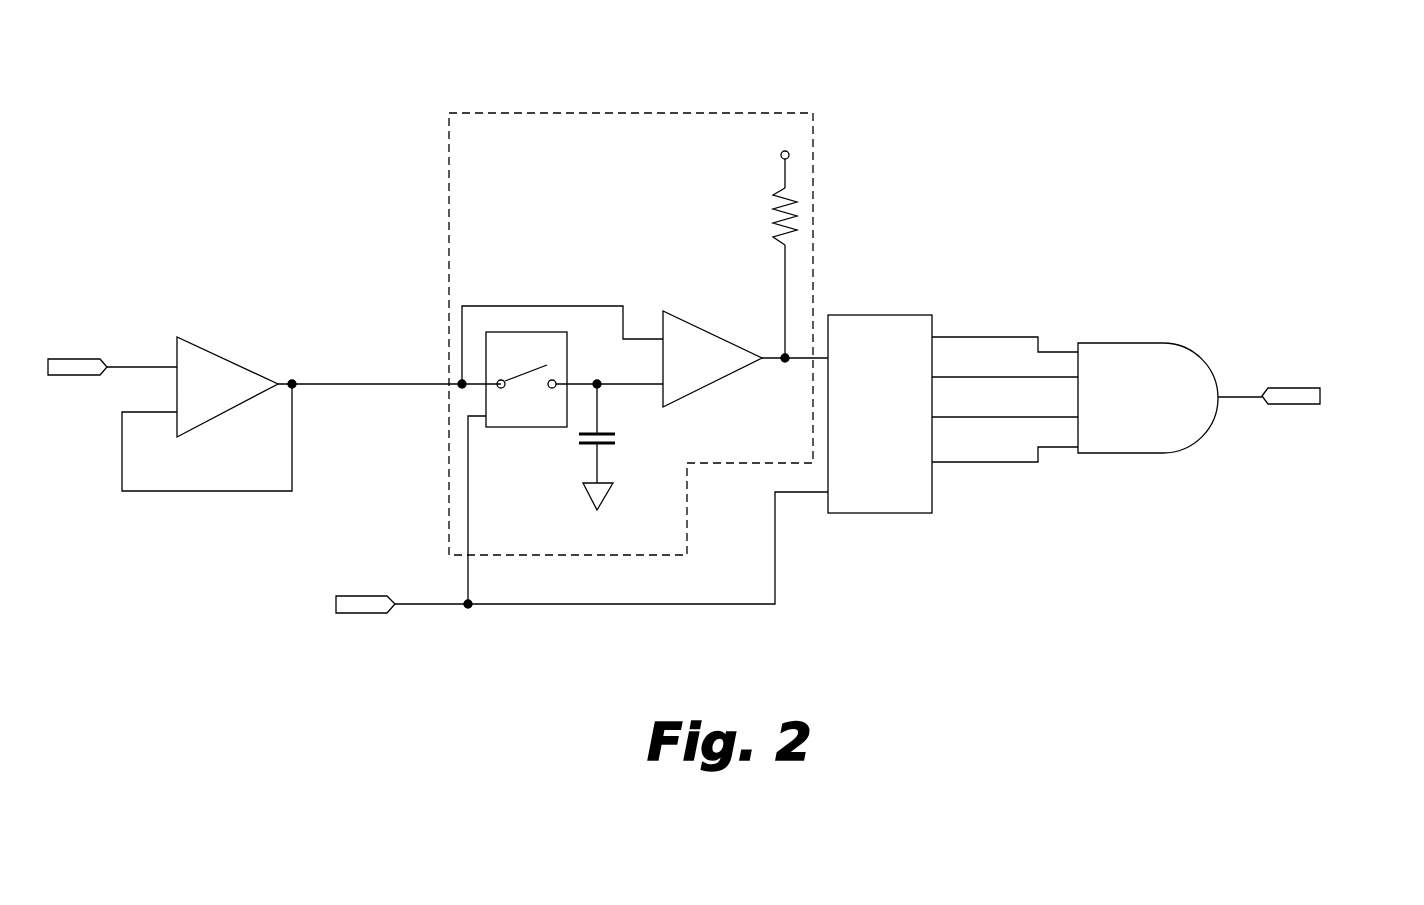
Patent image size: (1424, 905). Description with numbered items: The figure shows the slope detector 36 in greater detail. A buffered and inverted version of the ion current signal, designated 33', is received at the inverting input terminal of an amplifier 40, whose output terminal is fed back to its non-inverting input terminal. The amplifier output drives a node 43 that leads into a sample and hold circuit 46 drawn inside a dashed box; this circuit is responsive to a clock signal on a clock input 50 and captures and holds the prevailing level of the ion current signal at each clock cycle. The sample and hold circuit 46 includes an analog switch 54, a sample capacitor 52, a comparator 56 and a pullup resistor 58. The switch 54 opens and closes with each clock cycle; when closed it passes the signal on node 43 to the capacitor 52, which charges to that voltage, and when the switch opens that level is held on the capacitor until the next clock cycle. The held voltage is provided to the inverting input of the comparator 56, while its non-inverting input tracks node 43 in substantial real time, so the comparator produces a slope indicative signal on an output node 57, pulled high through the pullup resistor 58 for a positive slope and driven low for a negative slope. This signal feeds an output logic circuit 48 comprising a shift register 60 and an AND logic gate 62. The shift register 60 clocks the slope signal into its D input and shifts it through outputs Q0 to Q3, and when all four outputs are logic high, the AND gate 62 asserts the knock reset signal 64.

The buffered and inverted ion current signal 33' is at (112, 324).
The amplifier 40 is at (228, 357).
The slope detector 36 is at (517, 77).
The sample and hold circuit 46 is at (446, 208).
The node 43 is at (458, 381).
The analog switch 54 is at (513, 422).
The sample capacitor 52 is at (607, 447).
The comparator 56 is at (702, 382).
The output node 57 is at (782, 356).
The pullup resistor 58 is at (778, 222).
The shift register 60 is at (881, 315).
The output logic circuit 48 is at (1013, 294).
The AND logic gate 62 is at (1160, 355).
The knock reset signal 64 is at (1288, 404).
The clock input 50 is at (346, 614).